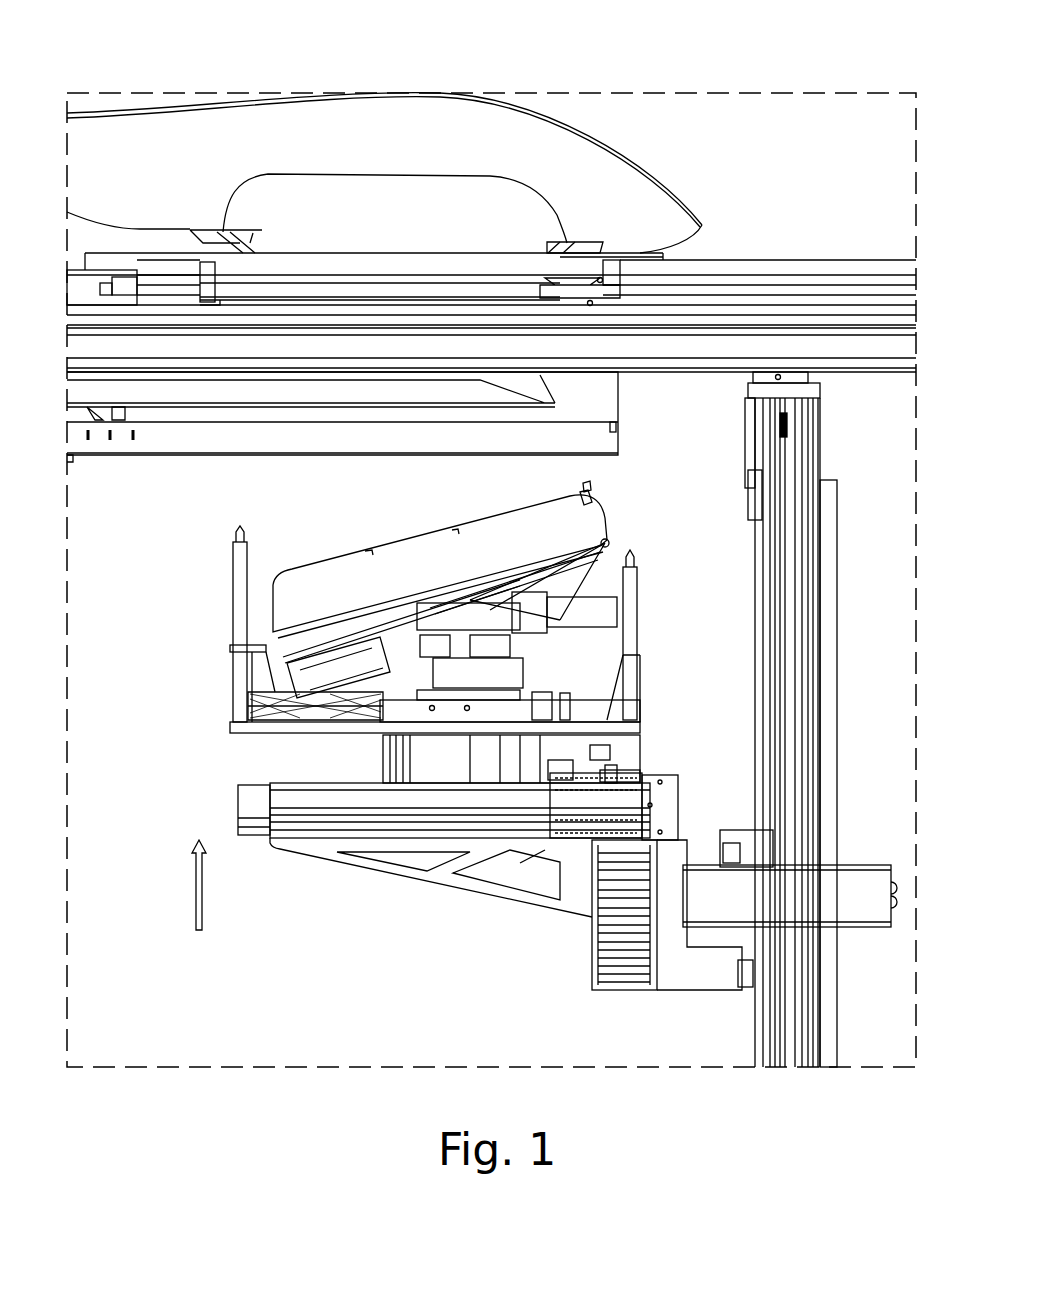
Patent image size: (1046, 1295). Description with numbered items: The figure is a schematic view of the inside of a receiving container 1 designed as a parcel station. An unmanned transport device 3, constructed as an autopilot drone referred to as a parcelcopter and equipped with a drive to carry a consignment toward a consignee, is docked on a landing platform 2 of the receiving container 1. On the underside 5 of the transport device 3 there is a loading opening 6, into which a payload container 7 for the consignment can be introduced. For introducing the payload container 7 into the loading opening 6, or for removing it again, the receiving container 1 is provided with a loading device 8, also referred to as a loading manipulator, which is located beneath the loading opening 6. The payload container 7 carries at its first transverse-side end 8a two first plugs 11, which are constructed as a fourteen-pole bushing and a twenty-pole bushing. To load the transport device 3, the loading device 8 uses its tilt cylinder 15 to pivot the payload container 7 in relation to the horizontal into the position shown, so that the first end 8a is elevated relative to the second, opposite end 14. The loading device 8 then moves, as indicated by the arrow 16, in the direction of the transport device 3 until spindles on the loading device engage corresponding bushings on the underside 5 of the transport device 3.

The receiving container 1 is at (858, 607).
The landing platform 2 is at (727, 258).
The unmanned transport device 3 is at (345, 128).
The underside 5 is at (120, 235).
The loading opening 6 is at (445, 210).
The payload container 7 is at (307, 585).
The loading device 8 is at (396, 885).
The first transverse-side end 8a is at (612, 527).
The first plugs 11 is at (592, 490).
The second end 14 is at (266, 596).
The tilt cylinder 15 is at (477, 613).
The arrow 16 is at (195, 898).